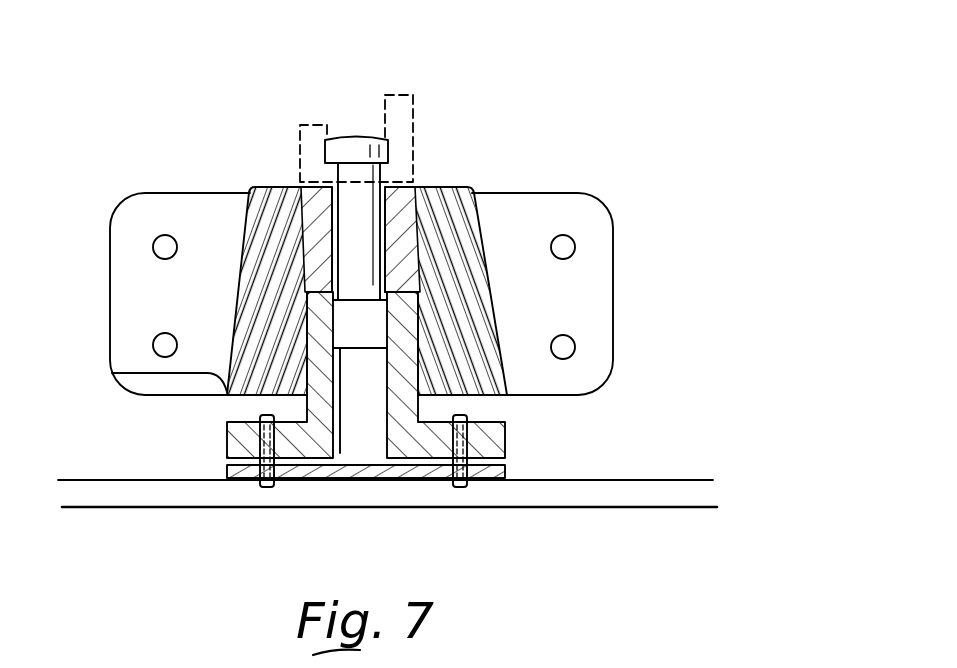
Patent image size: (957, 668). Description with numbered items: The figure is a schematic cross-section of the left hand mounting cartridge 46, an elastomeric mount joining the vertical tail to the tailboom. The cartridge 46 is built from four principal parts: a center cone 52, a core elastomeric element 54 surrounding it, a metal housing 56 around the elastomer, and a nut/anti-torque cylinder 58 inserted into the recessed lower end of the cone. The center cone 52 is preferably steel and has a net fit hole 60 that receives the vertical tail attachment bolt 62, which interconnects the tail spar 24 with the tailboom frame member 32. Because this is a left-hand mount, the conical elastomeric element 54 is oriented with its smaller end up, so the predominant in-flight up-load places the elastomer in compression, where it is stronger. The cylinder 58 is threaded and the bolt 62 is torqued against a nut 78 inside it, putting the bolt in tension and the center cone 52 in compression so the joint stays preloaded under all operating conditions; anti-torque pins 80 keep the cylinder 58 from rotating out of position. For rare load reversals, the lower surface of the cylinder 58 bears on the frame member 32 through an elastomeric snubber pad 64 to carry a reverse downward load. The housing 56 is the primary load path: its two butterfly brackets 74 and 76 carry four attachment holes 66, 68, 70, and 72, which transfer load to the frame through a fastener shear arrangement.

The tail spar 24 is at (398, 117).
The tailboom frame member 32 is at (110, 497).
The left hand mounting cartridge 46 is at (393, 266).
The center cone 52 is at (430, 190).
The core elastomeric element 54 is at (275, 187).
The metal housing 56 is at (127, 357).
The nut/anti-torque cylinder 58 is at (505, 440).
The net fit hole 60 is at (385, 192).
The vertical tail attachment bolt 62 is at (358, 145).
The elastomeric snubber pad 64 is at (498, 468).
The attachment hole 66 is at (157, 236).
The attachment hole 68 is at (158, 340).
The attachment hole 70 is at (571, 236).
The attachment hole 72 is at (573, 352).
The butterfly bracket 74 is at (122, 238).
The butterfly bracket 76 is at (565, 312).
The nut 78 is at (363, 330).
The anti-torque pin 80 is at (268, 473).